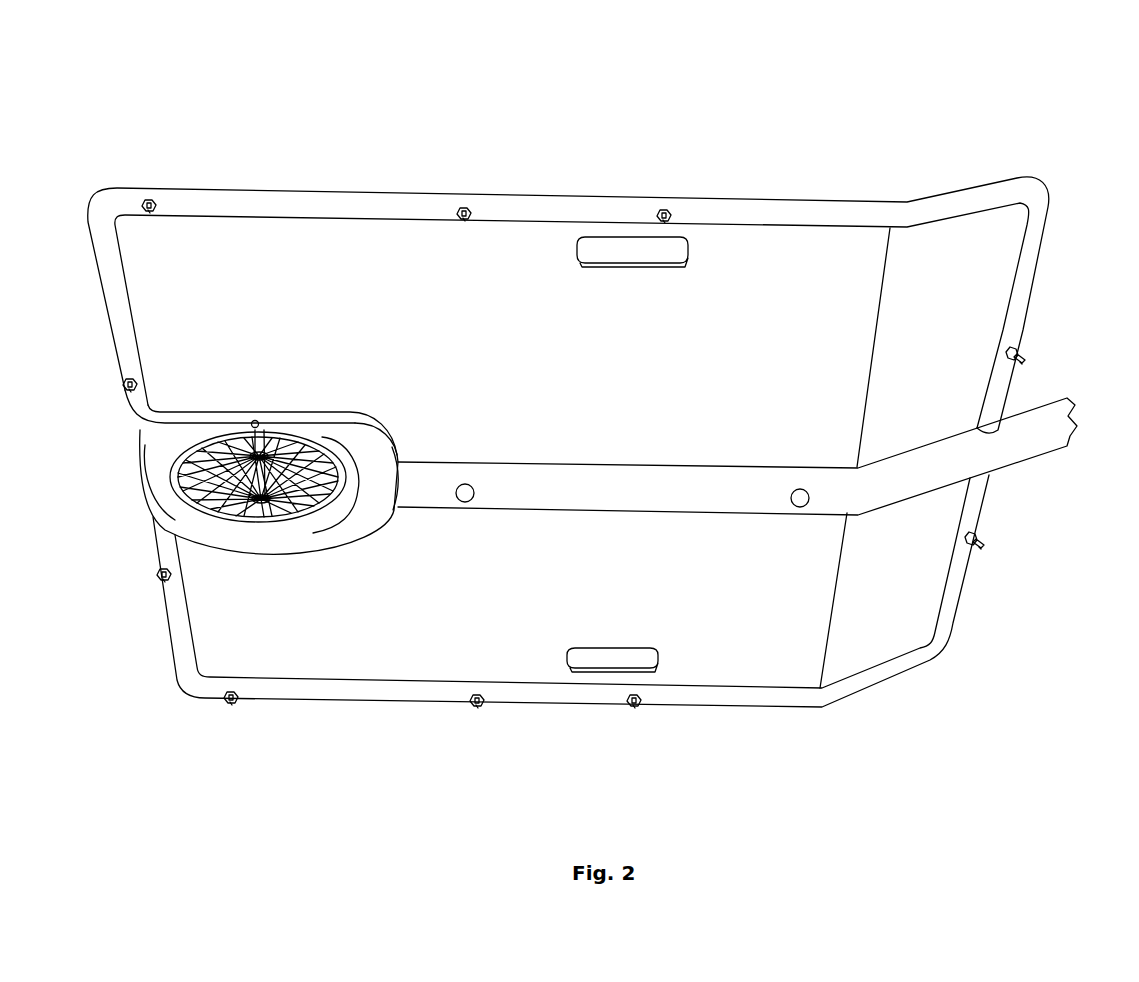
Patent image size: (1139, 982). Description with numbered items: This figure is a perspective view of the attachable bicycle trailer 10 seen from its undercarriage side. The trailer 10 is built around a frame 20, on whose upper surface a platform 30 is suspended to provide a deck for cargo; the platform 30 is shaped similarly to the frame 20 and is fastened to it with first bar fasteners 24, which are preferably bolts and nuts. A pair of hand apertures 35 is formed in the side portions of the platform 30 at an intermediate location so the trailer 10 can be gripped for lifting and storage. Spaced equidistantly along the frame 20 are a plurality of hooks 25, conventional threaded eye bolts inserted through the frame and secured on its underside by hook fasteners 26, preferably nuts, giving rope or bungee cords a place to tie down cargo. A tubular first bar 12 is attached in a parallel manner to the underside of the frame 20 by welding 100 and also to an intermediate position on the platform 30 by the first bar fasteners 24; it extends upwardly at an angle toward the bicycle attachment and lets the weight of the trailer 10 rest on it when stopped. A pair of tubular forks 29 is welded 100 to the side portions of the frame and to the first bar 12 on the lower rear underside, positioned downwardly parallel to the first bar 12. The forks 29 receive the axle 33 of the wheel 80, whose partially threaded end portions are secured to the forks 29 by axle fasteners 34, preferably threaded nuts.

The attachable bicycle trailer 10 is at (1052, 153).
The first bar 12 is at (940, 463).
The frame 20 is at (927, 224).
The first bar fasteners 24 is at (468, 497).
The hooks 25 is at (137, 380).
The hook fasteners 26 is at (148, 200).
The forks 29 is at (303, 421).
The platform 30 is at (296, 268).
The axle 33 is at (177, 483).
The axle fasteners 34 is at (247, 427).
The hand apertures 35 is at (617, 238).
The wheel 80 is at (185, 517).
The welding 100 is at (417, 457).